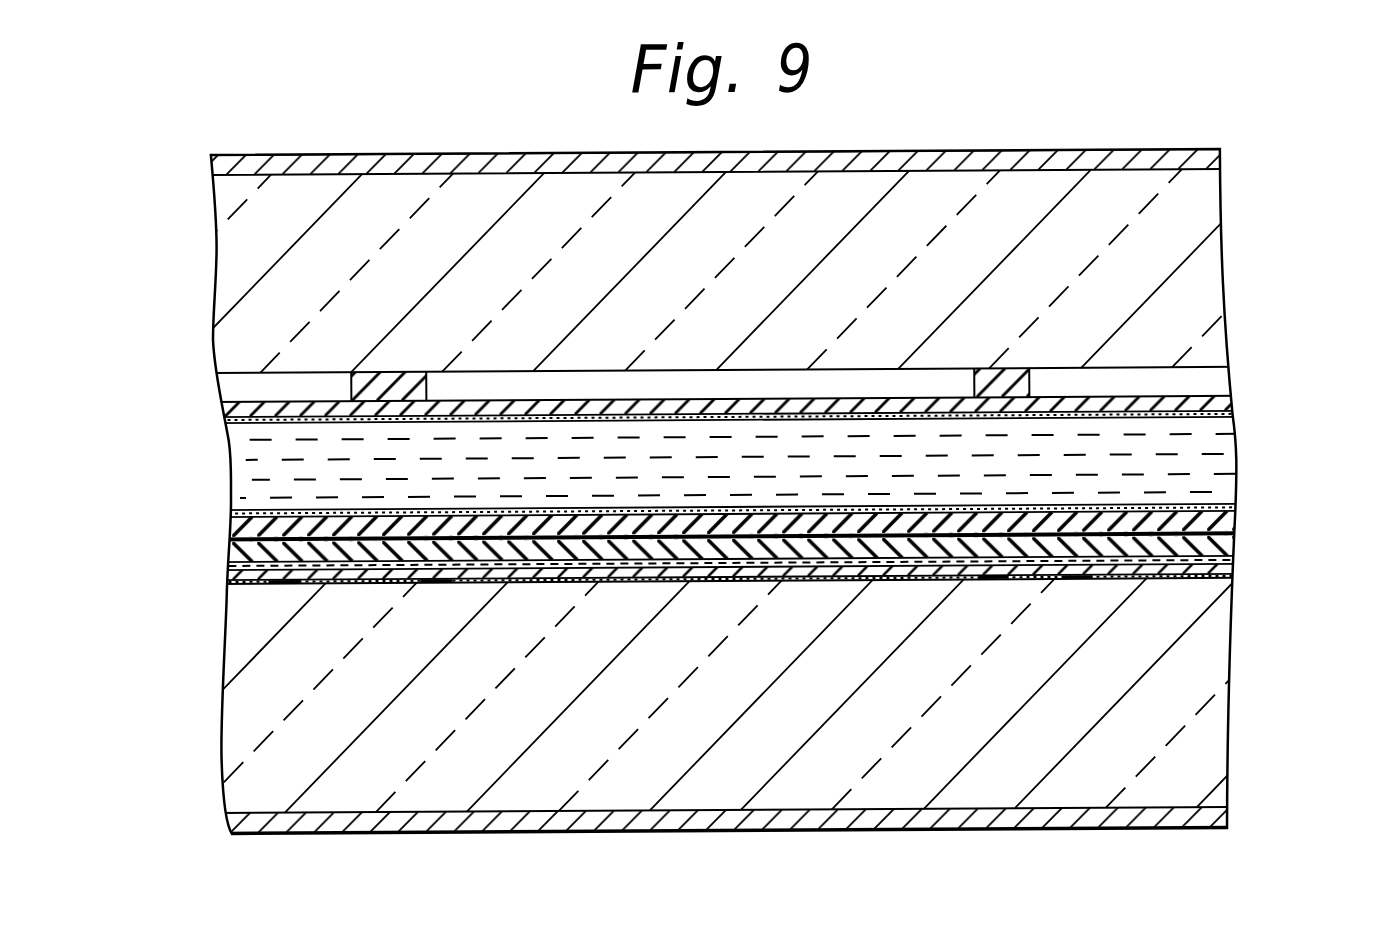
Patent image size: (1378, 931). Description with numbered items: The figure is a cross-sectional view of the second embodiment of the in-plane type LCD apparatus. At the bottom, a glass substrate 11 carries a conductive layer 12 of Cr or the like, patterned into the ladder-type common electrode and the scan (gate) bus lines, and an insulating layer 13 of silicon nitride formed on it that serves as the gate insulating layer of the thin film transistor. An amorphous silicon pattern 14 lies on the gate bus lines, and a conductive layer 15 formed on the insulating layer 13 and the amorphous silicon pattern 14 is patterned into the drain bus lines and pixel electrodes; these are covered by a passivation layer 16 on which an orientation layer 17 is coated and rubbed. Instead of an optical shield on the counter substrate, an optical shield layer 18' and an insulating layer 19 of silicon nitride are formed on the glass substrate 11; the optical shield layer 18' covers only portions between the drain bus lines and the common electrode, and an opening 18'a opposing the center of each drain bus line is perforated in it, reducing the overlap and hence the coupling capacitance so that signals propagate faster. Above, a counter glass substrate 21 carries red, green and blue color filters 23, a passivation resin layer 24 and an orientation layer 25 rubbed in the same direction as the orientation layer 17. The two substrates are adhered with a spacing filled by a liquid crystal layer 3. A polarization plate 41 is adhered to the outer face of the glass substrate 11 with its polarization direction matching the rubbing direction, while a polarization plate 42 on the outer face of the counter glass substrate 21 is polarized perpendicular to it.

The polarization plate 42 is at (1222, 170).
The counter glass substrate 21 is at (1208, 283).
The color filters 23 is at (235, 395).
The passivation resin layer 24 is at (1233, 414).
The orientation layer 25 is at (1236, 421).
The liquid crystal layer 3 is at (248, 468).
The orientation layer 17 is at (1237, 514).
The passivation layer 16 is at (1228, 528).
The conductive layer 15 is at (222, 538).
The insulating layer 13 is at (1215, 561).
The conductive layer 12 is at (226, 562).
The amorphous silicon pattern 14 is at (1140, 583).
The insulating layer 19 is at (222, 582).
The optical shield layer 18' is at (728, 626).
The opening 18'a is at (579, 734).
The glass substrate 11 is at (1180, 696).
The polarization plate 41 is at (1228, 824).